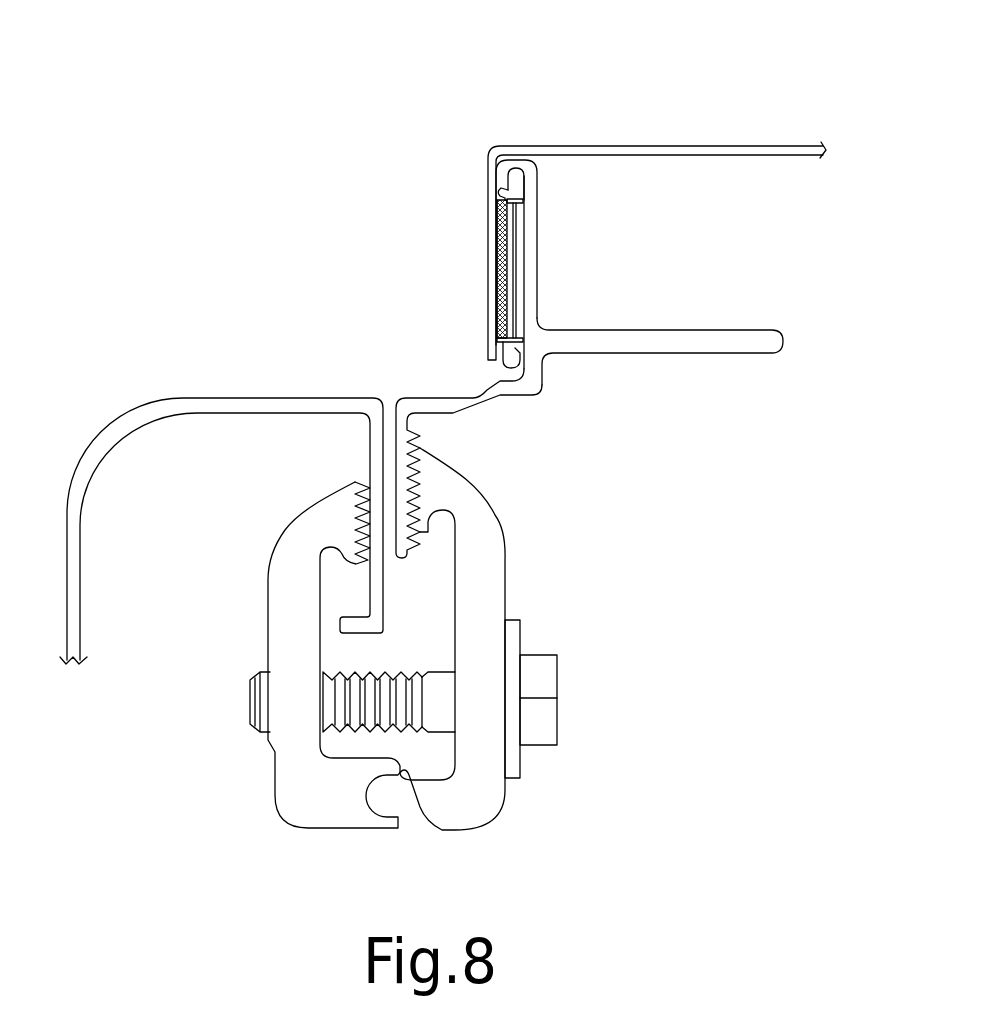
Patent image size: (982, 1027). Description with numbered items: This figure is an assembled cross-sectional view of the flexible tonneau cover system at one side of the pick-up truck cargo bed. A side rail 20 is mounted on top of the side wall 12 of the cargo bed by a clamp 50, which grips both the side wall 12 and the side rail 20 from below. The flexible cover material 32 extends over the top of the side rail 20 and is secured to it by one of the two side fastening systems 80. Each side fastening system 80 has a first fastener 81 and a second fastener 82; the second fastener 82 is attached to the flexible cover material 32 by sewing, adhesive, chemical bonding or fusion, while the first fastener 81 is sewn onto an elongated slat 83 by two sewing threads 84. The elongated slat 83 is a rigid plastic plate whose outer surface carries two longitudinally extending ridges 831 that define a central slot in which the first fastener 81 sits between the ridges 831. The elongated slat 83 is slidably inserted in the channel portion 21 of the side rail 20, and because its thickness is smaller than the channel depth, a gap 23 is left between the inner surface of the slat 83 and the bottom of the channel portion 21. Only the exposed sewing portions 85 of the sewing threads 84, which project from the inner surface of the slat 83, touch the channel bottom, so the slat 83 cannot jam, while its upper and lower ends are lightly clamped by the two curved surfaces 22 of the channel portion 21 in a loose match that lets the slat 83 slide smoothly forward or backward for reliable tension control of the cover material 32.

The side wall 12 is at (72, 594).
The side rail 20 is at (758, 328).
The channel portion 21 is at (537, 250).
The curved surface 22 is at (522, 380).
The gap 23 is at (546, 297).
The flexible cover material 32 is at (627, 148).
The clamp 50 is at (532, 858).
The side fastening system 80 is at (425, 262).
The first fastener 81 is at (494, 233).
The second fastener 82 is at (497, 295).
The elongated slat 83 is at (527, 218).
The longitudinally extending ridge 831 is at (493, 362).
The sewing thread 84 is at (496, 210).
The exposed sewing portion 85 is at (530, 200).